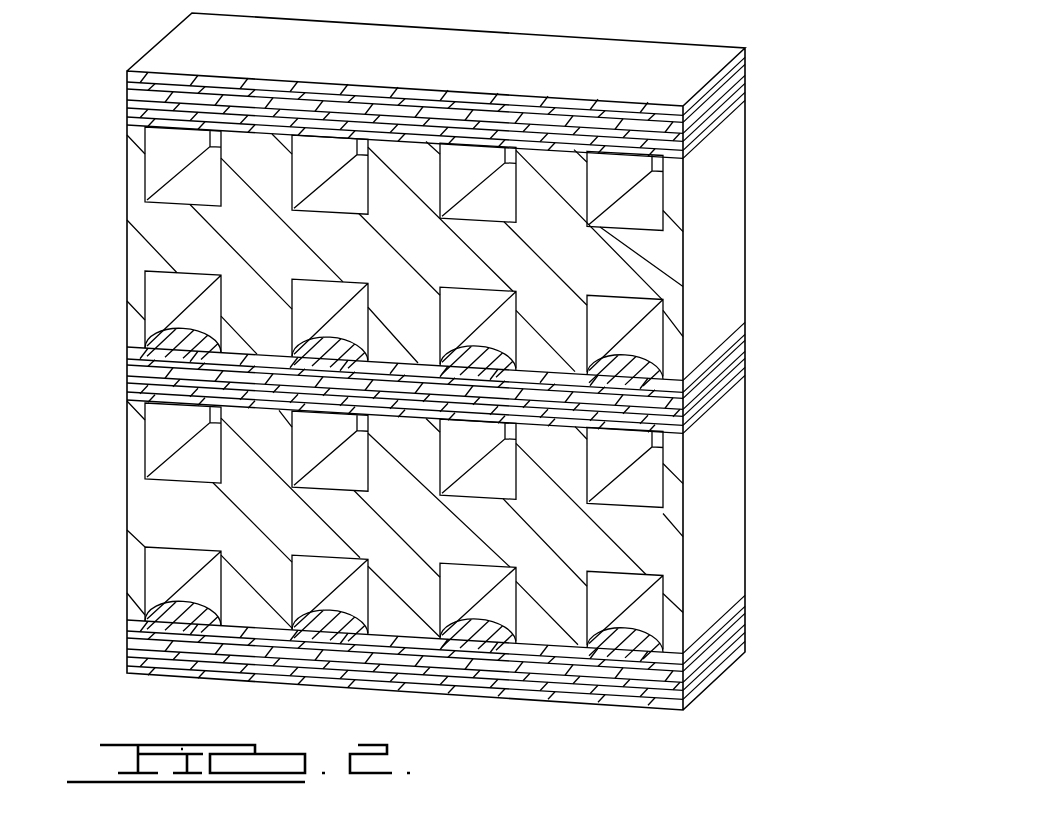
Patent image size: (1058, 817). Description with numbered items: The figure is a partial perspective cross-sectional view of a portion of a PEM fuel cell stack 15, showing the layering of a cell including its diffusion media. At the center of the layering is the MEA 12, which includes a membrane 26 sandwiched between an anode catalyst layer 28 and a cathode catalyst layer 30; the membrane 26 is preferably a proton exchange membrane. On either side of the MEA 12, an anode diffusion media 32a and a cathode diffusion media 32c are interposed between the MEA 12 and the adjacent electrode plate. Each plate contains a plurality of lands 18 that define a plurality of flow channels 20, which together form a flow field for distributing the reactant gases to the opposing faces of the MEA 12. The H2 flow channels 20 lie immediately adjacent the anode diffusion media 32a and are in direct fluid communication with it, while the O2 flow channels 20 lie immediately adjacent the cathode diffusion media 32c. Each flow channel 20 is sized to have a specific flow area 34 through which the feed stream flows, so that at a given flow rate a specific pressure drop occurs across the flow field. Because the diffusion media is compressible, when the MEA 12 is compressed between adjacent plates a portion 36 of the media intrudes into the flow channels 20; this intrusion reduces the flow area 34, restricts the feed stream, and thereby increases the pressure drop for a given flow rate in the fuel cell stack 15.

The fuel cell stack 15 is at (797, 74).
The MEA 12 is at (124, 350).
The lands 18 is at (137, 171).
The flow channels 20 is at (127, 135).
The membrane 26 is at (683, 417).
The anode catalyst layer 28 is at (683, 390).
The cathode catalyst layer 30 is at (683, 420).
The anode diffusion media 32a is at (128, 348).
The cathode diffusion media 32c is at (683, 427).
The flow area 34 is at (600, 318).
The portion of compressible media 36 is at (630, 372).